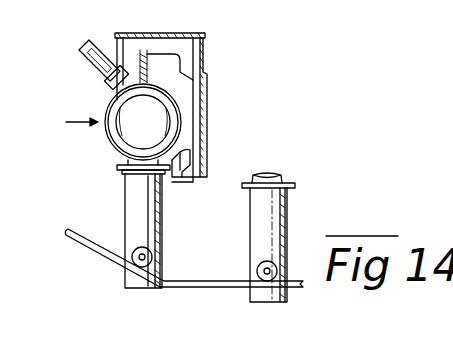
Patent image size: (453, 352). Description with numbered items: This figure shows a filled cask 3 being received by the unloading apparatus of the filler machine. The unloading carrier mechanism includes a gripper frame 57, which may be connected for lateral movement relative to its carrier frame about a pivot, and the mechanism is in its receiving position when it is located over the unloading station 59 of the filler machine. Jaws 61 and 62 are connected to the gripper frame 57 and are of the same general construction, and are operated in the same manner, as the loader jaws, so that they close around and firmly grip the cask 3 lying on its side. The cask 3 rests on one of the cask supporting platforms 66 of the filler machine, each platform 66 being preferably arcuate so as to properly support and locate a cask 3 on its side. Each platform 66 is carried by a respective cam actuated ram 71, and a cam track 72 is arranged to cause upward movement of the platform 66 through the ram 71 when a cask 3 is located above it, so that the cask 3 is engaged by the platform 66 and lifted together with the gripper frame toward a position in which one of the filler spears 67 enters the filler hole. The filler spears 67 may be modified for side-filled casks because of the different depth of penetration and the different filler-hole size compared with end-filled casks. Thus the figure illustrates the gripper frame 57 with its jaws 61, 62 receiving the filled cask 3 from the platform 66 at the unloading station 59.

The cask 3 is at (135, 133).
The gripper frame 57 is at (210, 108).
The unloading station 59 is at (120, 212).
The jaw 61 is at (112, 96).
The jaw 62 is at (174, 178).
The cask supporting platform 66 is at (268, 176).
The filler spear 67 is at (140, 72).
The cam actuated ram 71 is at (138, 185).
The cam track 72 is at (98, 250).